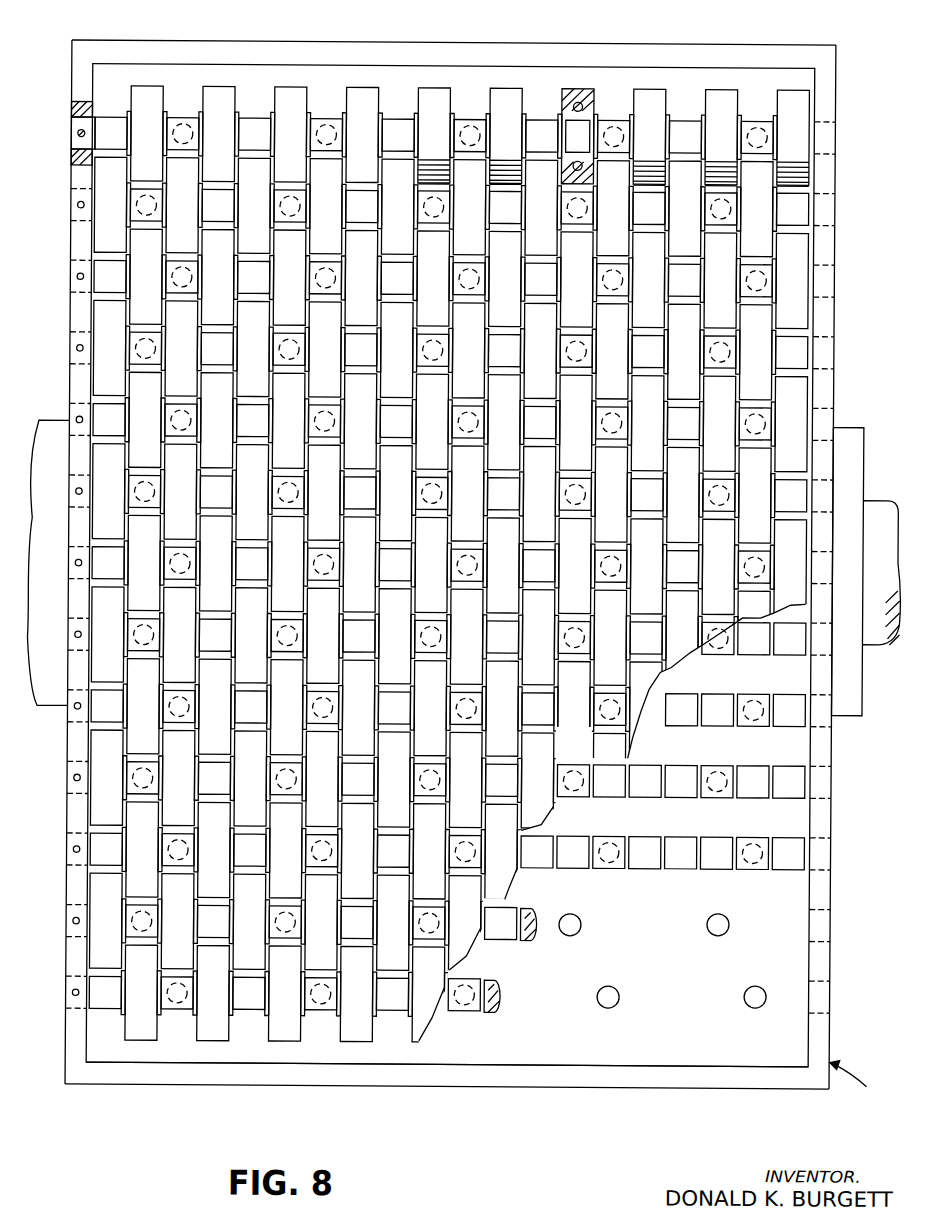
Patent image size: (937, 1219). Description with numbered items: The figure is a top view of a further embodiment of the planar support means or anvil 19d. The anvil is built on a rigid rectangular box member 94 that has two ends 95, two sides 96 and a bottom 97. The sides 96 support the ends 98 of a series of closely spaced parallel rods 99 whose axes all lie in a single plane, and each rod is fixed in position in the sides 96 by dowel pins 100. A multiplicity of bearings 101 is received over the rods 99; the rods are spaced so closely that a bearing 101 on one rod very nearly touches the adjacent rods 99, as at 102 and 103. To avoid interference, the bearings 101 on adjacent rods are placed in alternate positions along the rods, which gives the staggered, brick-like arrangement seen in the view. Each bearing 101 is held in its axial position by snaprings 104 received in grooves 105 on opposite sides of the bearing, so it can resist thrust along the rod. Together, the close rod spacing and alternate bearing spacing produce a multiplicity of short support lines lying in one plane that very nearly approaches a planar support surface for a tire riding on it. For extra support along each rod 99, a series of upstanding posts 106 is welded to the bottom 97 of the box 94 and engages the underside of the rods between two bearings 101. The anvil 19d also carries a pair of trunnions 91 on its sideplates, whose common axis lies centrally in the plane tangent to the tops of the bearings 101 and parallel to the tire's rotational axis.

The planar support means or anvil 19d is at (862, 1085).
The trunnions 91 is at (39, 423).
The rigid rectangular box member 94 is at (592, 1053).
The ends 95 is at (326, 43).
The sides 96 is at (78, 1052).
The bottom 97 is at (148, 1052).
The ends of rods 98 is at (77, 905).
The rods 99 is at (797, 848).
The dowel pins 100 is at (73, 850).
The bearings 101 is at (572, 88).
The near-touching point 102 is at (759, 160).
The near-touching point 103 is at (760, 262).
The snaprings 104 is at (517, 116).
The grooves 105 is at (590, 136).
The upstanding posts 106 is at (776, 410).